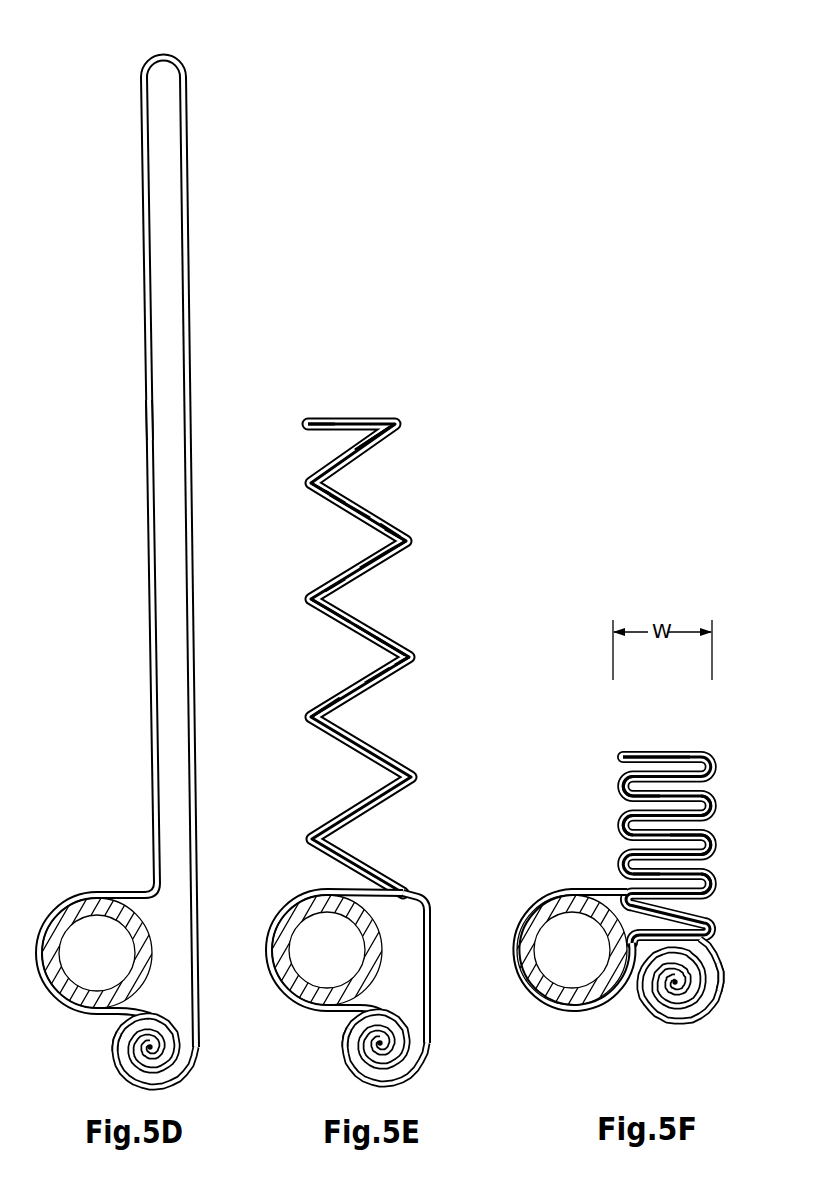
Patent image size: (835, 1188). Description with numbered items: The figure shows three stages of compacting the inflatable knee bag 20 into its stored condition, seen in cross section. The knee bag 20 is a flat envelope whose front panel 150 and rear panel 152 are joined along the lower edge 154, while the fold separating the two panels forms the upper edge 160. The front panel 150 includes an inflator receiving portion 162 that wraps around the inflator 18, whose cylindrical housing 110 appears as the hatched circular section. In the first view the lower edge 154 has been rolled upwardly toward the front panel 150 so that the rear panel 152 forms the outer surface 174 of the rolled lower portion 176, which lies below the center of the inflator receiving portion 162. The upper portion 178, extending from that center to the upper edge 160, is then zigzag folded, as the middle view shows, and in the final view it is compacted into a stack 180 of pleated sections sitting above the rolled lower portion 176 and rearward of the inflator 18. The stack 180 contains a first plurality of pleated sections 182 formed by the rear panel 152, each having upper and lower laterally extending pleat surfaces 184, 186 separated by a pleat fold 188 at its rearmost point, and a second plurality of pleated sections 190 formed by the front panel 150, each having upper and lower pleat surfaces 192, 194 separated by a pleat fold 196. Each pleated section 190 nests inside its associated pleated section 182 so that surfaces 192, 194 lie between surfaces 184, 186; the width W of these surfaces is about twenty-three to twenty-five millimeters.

In FIG. 5D, the inflator 18 is at (95, 950).
In FIG. 5E, the inflator 18 is at (327, 955).
In FIG. 5F, the inflator 18 is at (568, 957).
In FIG. 5D, the inflatable knee bag 20 is at (152, 566).
In FIG. 5E, the inflatable knee bag 20 is at (380, 739).
In FIG. 5F, the inflatable knee bag 20 is at (647, 878).
In FIG. 5D, the cylindrical housing 110 is at (147, 910).
In FIG. 5E, the cylindrical housing 110 is at (385, 947).
In FIG. 5F, the cylindrical housing 110 is at (633, 990).
In FIG. 5D, the front panel 150 is at (143, 253).
In FIG. 5E, the front panel 150 is at (328, 462).
In FIG. 5F, the front panel 150 is at (615, 780).
In FIG. 5D, the rear panel 152 is at (190, 272).
In FIG. 5E, the rear panel 152 is at (385, 452).
In FIG. 5F, the rear panel 152 is at (720, 800).
In FIG. 5D, the lower edge 154 is at (147, 1050).
In FIG. 5E, the lower edge 154 is at (382, 1047).
In FIG. 5F, the lower edge 154 is at (675, 986).
In FIG. 5D, the upper edge 160 is at (165, 53).
In FIG. 5E, the upper edge 160 is at (302, 423).
In FIG. 5F, the upper edge 160 is at (610, 760).
In FIG. 5D, the inflator receiving portion 162 is at (83, 896).
In FIG. 5E, the inflator receiving portion 162 is at (310, 888).
In FIG. 5F, the inflator receiving portion 162 is at (570, 893).
In FIG. 5D, the outer surface 174 is at (128, 1078).
In FIG. 5E, the outer surface 174 is at (375, 1082).
In FIG. 5F, the outer surface 174 is at (708, 1003).
In FIG. 5D, the rolled lower portion 176 is at (116, 1040).
In FIG. 5E, the rolled lower portion 176 is at (345, 1049).
In FIG. 5F, the rolled lower portion 176 is at (722, 985).
In FIG. 5D, the upper portion 178 is at (146, 417).
In FIG. 5E, the upper portion 178 is at (322, 623).
In FIG. 5F, the upper portion 178 is at (609, 815).
In FIG. 5F, the stack of pleated sections 180 is at (655, 745).
In FIG. 5E, the first plurality of pleated sections 182 is at (422, 520).
In FIG. 5F, the first plurality of pleated sections 182 is at (724, 808).
In FIG. 5E, the upper laterally extending pleat surface 184 is at (363, 507).
In FIG. 5F, the upper laterally extending pleat surface 184 is at (697, 832).
In FIG. 5E, the lower laterally extending pleat surface 186 is at (387, 548).
In FIG. 5F, the lower laterally extending pleat surface 186 is at (708, 858).
In FIG. 5E, the pleat fold 188 is at (414, 543).
In FIG. 5F, the pleat fold 188 is at (707, 847).
In FIG. 5E, the second plurality of pleated sections 190 is at (323, 532).
In FIG. 5F, the second plurality of pleated sections 190 is at (608, 760).
In FIG. 5E, the upper laterally extending pleat surface 192 is at (340, 508).
In FIG. 5F, the upper laterally extending pleat surface 192 is at (615, 800).
In FIG. 5E, the lower laterally extending pleat surface 194 is at (338, 574).
In FIG. 5F, the lower laterally extending pleat surface 194 is at (615, 812).
In FIG. 5E, the pleat fold 196 is at (392, 542).
In FIG. 5F, the pleat fold 196 is at (698, 760).